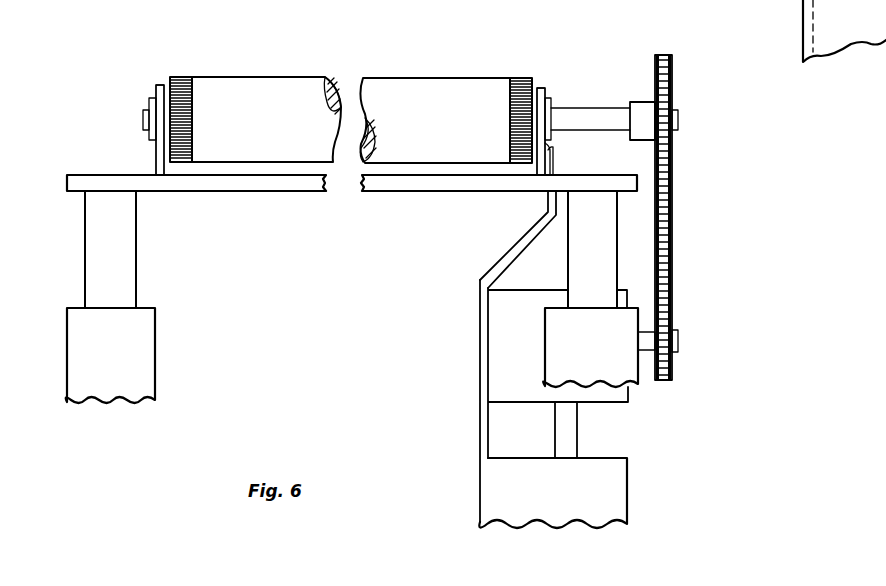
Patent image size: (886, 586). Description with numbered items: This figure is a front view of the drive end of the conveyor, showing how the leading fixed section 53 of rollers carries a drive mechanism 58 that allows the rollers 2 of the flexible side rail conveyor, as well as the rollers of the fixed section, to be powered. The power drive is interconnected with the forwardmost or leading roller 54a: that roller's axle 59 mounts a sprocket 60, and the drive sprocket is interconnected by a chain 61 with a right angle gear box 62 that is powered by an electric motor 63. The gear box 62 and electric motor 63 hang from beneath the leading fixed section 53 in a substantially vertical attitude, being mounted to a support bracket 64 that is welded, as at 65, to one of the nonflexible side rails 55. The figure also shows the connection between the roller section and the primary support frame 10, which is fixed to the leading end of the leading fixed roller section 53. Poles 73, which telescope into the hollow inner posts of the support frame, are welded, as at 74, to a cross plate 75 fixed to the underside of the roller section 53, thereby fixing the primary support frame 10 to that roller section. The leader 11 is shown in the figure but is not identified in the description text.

The rollers 2 is at (255, 119).
The leading roller 54a is at (446, 120).
The primary support frame 10 is at (157, 380).
The roll assembly 11 is at (112, 135).
The leading fixed section 53 is at (541, 87).
The nonflexible side rails 55 is at (156, 161).
The drive mechanism 58 is at (748, 296).
The axle 59 is at (578, 130).
The sprocket 60 is at (655, 92).
The chain 61 is at (672, 203).
The right angle gear box 62 is at (500, 342).
The electric motor 63 is at (616, 500).
The support bracket 64 is at (479, 290).
The weld 65 is at (553, 150).
The pole 73 is at (354, 249).
The weld 74 is at (113, 193).
The cross plate 75 is at (360, 190).